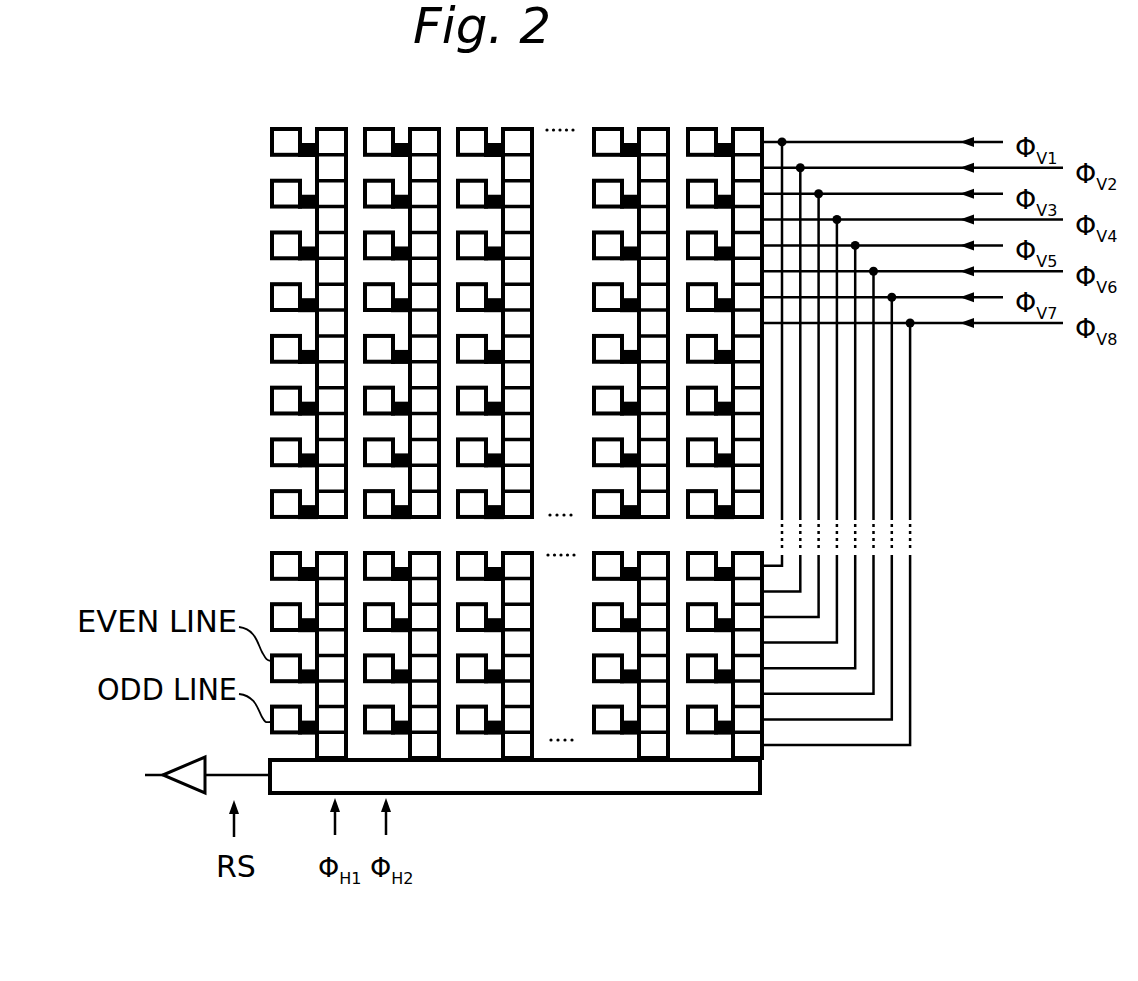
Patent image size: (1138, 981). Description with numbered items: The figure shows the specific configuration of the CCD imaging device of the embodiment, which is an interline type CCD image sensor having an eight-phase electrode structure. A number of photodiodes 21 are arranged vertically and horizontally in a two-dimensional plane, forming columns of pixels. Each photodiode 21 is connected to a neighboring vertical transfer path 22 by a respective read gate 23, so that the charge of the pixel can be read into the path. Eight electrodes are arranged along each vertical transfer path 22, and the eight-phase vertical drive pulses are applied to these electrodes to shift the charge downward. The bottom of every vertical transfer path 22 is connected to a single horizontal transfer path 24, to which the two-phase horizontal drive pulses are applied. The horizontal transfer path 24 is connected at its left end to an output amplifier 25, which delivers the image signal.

The photodiode 21 is at (688, 131).
The vertical transfer path 22 is at (751, 131).
The read gate 23 is at (723, 142).
The horizontal transfer path 24 is at (592, 797).
The output amplifier 25 is at (184, 764).